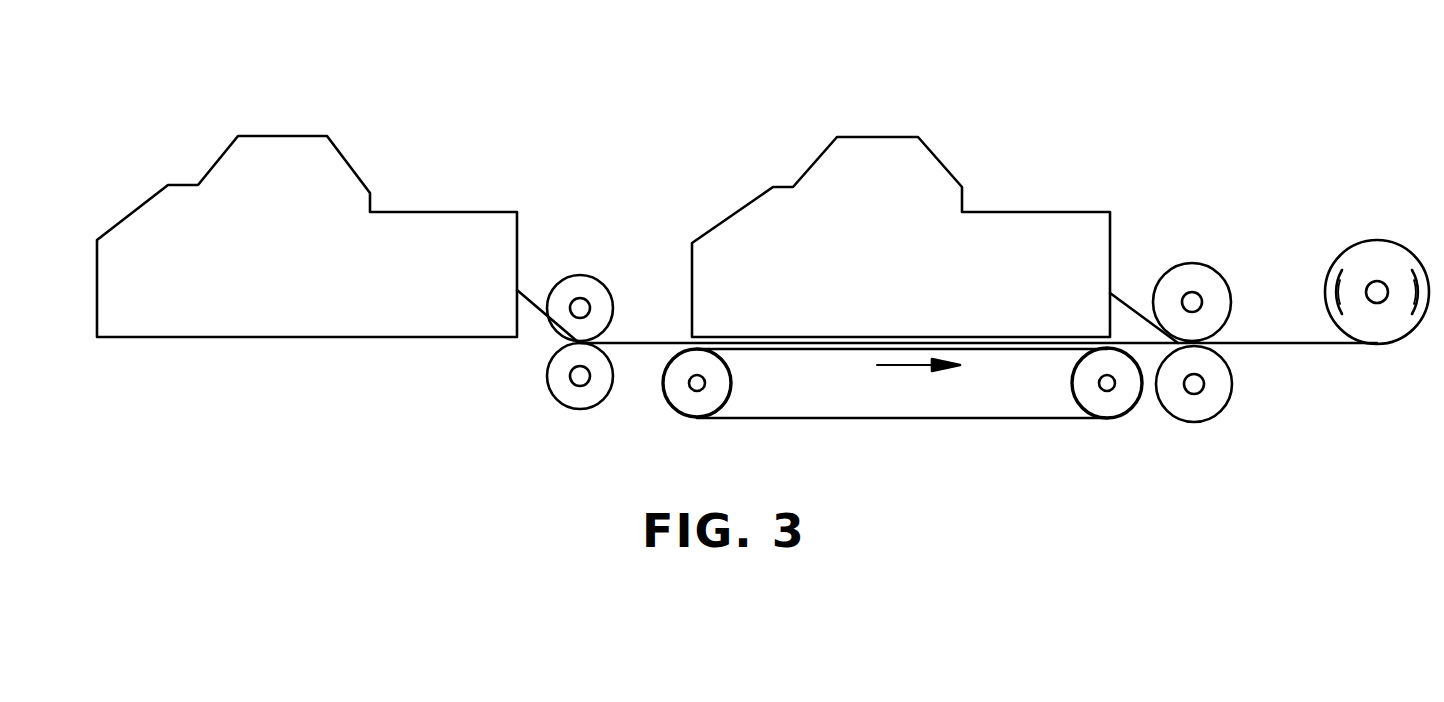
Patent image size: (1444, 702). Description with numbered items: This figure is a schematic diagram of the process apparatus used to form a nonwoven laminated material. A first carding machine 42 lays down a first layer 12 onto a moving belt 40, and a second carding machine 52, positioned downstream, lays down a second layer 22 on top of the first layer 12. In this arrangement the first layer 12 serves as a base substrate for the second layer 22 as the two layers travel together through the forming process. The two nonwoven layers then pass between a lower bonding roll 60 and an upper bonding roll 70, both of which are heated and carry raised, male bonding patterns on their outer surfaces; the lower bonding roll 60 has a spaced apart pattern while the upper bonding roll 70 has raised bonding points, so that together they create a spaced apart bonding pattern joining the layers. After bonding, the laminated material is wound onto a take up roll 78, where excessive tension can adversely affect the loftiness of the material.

The first layer 12 is at (656, 343).
The second layer 22 is at (1121, 298).
The moving belt 40 is at (835, 418).
The first carding machine 42 is at (284, 136).
The second carding machine 52 is at (876, 137).
The lower bonding roll 60 is at (1188, 422).
The upper bonding roll 70 is at (1221, 271).
The take up roll 78 is at (1375, 240).